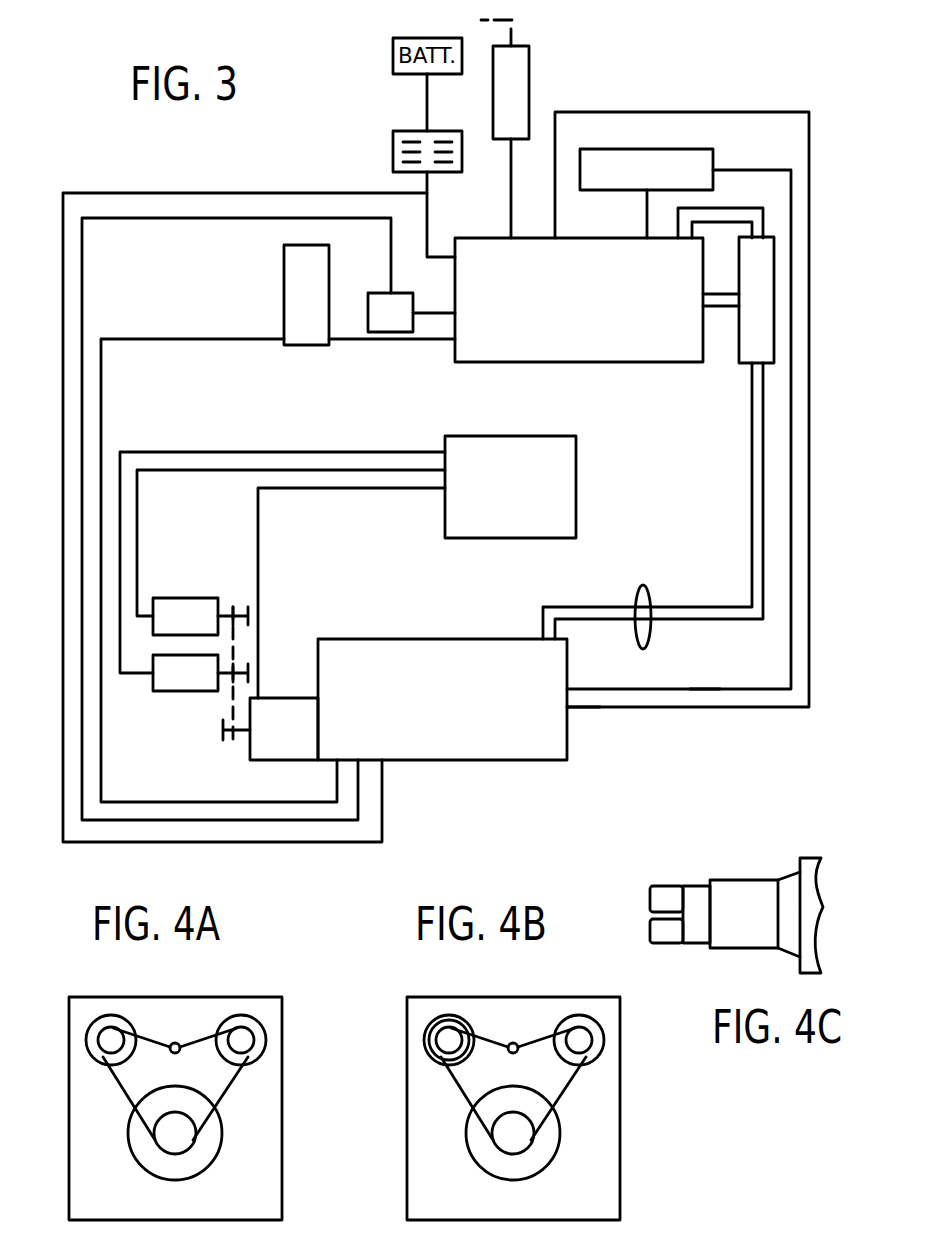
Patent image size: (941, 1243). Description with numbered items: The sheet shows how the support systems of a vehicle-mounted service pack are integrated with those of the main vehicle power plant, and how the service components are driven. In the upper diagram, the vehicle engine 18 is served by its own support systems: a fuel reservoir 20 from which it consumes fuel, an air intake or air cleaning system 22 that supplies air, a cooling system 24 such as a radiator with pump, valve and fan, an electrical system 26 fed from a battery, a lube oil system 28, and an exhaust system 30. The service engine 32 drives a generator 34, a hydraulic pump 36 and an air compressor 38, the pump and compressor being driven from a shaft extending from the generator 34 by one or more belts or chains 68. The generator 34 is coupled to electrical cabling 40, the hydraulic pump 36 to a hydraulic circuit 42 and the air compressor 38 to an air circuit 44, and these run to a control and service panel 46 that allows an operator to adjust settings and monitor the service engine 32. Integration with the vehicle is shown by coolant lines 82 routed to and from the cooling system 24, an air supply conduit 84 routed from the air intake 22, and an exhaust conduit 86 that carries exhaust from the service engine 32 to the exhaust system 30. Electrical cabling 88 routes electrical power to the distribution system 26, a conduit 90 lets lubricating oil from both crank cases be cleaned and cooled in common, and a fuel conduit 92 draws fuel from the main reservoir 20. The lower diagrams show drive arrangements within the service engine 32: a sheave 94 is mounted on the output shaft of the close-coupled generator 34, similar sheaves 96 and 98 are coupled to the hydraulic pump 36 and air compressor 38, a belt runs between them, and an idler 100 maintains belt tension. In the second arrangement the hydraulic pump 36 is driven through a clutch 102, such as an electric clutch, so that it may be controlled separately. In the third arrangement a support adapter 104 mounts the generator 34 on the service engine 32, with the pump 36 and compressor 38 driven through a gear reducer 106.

In FIG. 3, the vehicle engine 18 is at (617, 363).
In FIG. 3, the fuel reservoir 20 is at (283, 262).
In FIG. 3, the air intake or air cleaning system 22 is at (637, 148).
In FIG. 3, the cooling system 24 is at (739, 343).
In FIG. 3, the electrical system 26 is at (415, 131).
In FIG. 3, the lube oil system 28 is at (381, 293).
In FIG. 3, the exhaust system 30 is at (529, 83).
In FIG. 3, the service engine 32 is at (425, 762).
In FIG. 4A, the service engine 32 is at (282, 1183).
In FIG. 4B, the service engine 32 is at (620, 1183).
In FIG. 4C, the service engine 32 is at (810, 855).
In FIG. 3, the generator 34 is at (282, 762).
In FIG. 4A, the generator 34 is at (132, 1153).
In FIG. 4B, the generator 34 is at (470, 1153).
In FIG. 4C, the generator 34 is at (732, 949).
In FIG. 3, the hydraulic pump 36 is at (180, 692).
In FIG. 4A, the hydraulic pump 36 is at (104, 1031).
In FIG. 4B, the hydraulic pump 36 is at (437, 1033).
In FIG. 4C, the hydraulic pump 36 is at (667, 886).
In FIG. 3, the air compressor 38 is at (167, 598).
In FIG. 4A, the air compressor 38 is at (263, 1052).
In FIG. 4B, the air compressor 38 is at (601, 1052).
In FIG. 4C, the air compressor 38 is at (663, 944).
In FIG. 3, the electrical cabling 40 is at (257, 528).
In FIG. 3, the hydraulic circuit 42 is at (162, 452).
In FIG. 3, the air circuit 44 is at (198, 470).
In FIG. 3, the control and service panel 46 is at (576, 487).
In FIG. 3, the belts or chains 68 is at (233, 743).
In FIG. 4A, the belts or chains 68 is at (118, 1083).
In FIG. 4B, the belts or chains 68 is at (456, 1083).
In FIG. 3, the coolant lines 82 is at (645, 585).
In FIG. 3, the air supply conduit 84 is at (707, 689).
In FIG. 3, the exhaust conduit 86 is at (610, 707).
In FIG. 3, the electrical cabling 88 is at (142, 193).
In FIG. 3, the conduit 90 is at (187, 218).
In FIG. 3, the fuel conduit 92 is at (138, 339).
In FIG. 4A, the sheave 94 is at (182, 1135).
In FIG. 4B, the sheave 94 is at (520, 1135).
In FIG. 4A, the sheave 96 is at (110, 1037).
In FIG. 4B, the sheave 96 is at (448, 1037).
In FIG. 4A, the sheave 98 is at (243, 1037).
In FIG. 4B, the sheave 98 is at (581, 1037).
In FIG. 4A, the idler 100 is at (175, 1043).
In FIG. 4B, the idler 100 is at (513, 1043).
In FIG. 4B, the clutch 102 is at (440, 1018).
In FIG. 4C, the support adapter 104 is at (790, 875).
In FIG. 4C, the drive shaft 106 is at (700, 885).